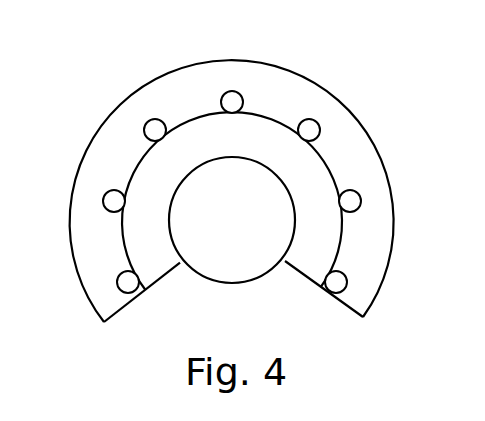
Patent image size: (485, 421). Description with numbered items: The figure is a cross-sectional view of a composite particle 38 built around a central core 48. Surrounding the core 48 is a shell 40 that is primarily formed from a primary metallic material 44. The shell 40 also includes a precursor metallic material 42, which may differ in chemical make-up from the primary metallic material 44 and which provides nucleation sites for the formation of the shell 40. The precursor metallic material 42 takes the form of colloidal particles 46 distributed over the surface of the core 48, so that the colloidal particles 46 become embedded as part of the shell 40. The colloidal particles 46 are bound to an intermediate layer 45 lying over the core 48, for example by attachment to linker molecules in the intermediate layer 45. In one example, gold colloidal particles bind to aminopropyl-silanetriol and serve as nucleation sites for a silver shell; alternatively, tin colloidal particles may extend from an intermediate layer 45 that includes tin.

The composite particle 38 is at (298, 72).
The shell 40 is at (198, 105).
The precursor metallic material 42 is at (231, 91).
The primary metallic material 44 is at (365, 150).
The intermediate layer 45 is at (250, 148).
The colloidal particles 46 is at (146, 121).
The core 48 is at (248, 233).